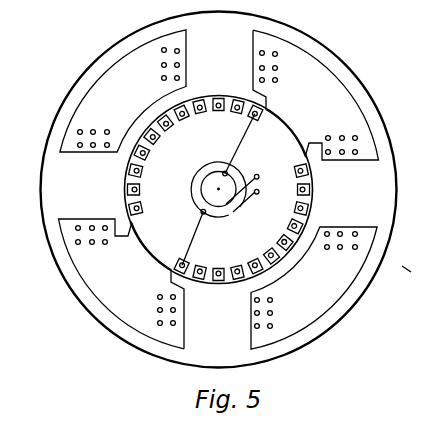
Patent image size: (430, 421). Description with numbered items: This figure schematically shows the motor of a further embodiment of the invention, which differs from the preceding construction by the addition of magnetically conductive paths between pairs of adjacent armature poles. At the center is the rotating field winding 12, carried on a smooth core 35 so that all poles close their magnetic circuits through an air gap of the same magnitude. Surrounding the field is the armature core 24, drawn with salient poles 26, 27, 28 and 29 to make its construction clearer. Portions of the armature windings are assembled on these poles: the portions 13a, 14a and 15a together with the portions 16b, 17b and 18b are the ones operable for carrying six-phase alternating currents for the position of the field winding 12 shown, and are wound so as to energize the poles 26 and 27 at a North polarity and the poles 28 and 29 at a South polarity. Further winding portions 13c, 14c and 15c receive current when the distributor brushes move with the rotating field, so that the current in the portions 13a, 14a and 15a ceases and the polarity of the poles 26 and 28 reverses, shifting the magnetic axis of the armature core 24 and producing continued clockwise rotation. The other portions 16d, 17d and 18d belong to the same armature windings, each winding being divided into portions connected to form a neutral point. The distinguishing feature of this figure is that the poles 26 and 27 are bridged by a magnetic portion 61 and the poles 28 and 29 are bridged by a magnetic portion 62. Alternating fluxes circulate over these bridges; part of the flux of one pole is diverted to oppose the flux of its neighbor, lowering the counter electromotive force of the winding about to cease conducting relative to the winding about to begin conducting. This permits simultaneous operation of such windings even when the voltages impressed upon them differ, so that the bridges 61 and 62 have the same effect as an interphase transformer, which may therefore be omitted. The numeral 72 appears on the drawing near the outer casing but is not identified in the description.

The field winding 12 is at (178, 262).
The armature winding portion 13a is at (108, 130).
The armature winding portion 14a is at (93, 130).
The armature winding portion 15a is at (78, 131).
The armature winding portion 13c is at (77, 230).
The armature winding portion 14c is at (92, 231).
The armature winding portion 15c is at (107, 231).
The armature winding portion 16b is at (277, 81).
The armature winding portion 17b is at (277, 68).
The armature winding portion 18b is at (263, 52).
The armature winding portion 16d is at (162, 78).
The armature winding portion 17d is at (162, 66).
The armature winding portion 18d is at (163, 48).
The armature core 24 is at (353, 302).
The armature pole 26 is at (355, 194).
The armature pole 27 is at (227, 325).
The armature pole 28 is at (90, 185).
The armature pole 29 is at (231, 58).
The smooth core 35 is at (296, 121).
The magnetic portion 61 is at (288, 271).
The magnetic portion 62 is at (153, 103).
The housing 72 is at (416, 274).